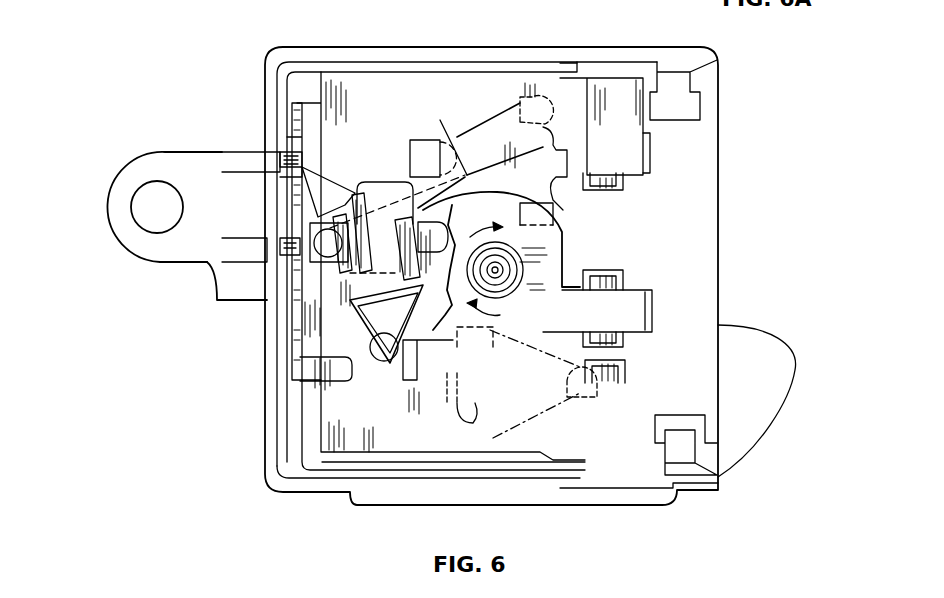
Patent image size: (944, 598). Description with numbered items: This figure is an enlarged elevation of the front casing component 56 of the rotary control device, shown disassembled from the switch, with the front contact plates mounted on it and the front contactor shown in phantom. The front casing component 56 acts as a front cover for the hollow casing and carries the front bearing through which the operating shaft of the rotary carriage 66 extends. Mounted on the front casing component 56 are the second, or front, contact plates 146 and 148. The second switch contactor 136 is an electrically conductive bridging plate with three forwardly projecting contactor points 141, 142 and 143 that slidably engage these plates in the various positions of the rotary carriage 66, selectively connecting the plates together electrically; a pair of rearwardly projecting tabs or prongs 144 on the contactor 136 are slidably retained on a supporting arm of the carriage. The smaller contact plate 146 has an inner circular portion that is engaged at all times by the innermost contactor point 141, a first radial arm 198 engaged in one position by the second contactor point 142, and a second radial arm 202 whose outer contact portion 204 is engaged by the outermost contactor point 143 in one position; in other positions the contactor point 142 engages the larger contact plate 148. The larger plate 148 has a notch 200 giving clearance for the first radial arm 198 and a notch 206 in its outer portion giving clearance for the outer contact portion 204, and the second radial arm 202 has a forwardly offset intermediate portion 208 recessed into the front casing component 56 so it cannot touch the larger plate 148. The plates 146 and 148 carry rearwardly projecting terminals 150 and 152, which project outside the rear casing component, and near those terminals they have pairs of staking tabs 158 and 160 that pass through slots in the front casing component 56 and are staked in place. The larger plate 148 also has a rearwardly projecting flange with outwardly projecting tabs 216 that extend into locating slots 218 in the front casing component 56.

The front casing component 56 is at (275, 487).
The rotary carriage 66 is at (347, 352).
The second switch contactor 136 is at (470, 213).
The innermost contactor point 141 is at (560, 217).
The second contactor point 142 is at (440, 120).
The third or outermost contactor point 143 is at (540, 110).
The rearwardly projecting tabs or prongs 144 is at (420, 140).
The second contact plate 146 is at (515, 360).
The second contact plate 148 is at (603, 80).
The terminal 150 is at (653, 313).
The terminal 152 is at (653, 143).
The staking tabs 158 is at (603, 282).
The staking tabs 160 is at (603, 190).
The first radial arm 198 is at (383, 313).
The notch 200 is at (413, 360).
The second radial arm 202 is at (340, 193).
The outer contact portion 204 is at (338, 193).
The notch 206 is at (293, 280).
The intermediate portion 208 is at (365, 178).
The outwardly projecting tabs 216 is at (280, 160).
The locating slots 218 is at (280, 170).